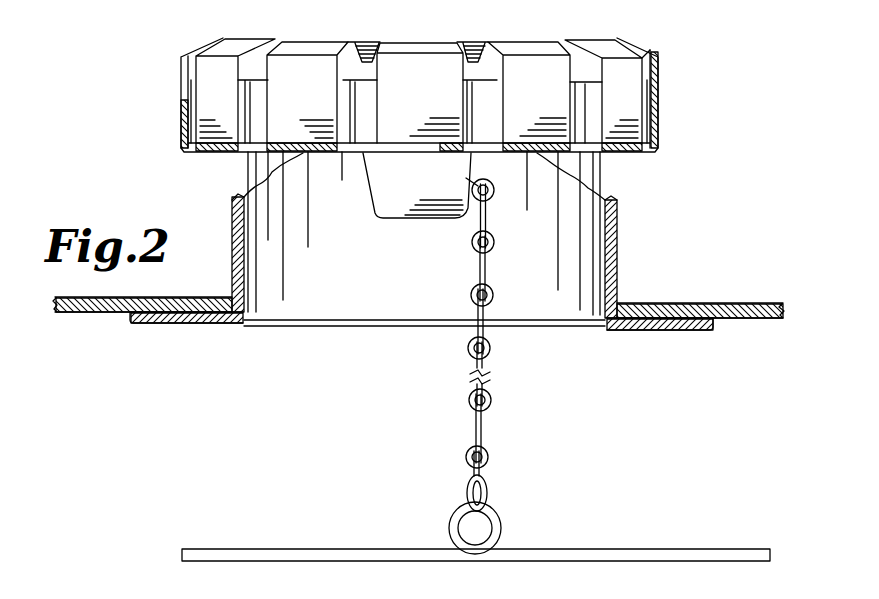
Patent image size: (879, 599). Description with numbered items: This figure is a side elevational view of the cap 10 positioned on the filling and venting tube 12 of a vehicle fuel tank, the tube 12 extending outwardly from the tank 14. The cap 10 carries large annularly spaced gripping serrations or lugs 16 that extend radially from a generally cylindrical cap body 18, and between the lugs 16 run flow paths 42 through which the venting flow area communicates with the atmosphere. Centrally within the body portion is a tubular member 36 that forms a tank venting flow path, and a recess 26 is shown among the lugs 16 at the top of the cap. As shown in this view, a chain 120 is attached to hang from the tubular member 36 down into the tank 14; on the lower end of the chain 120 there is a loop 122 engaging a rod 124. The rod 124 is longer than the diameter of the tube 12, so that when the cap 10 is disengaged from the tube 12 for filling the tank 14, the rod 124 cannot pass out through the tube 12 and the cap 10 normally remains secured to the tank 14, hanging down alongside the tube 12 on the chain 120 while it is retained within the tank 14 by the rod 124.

The cap 10 is at (664, 95).
The filling and venting tube 12 is at (610, 245).
The tank 14 is at (733, 307).
The lugs 16 is at (542, 54).
The cap body 18 is at (358, 152).
The notch 26 is at (474, 44).
The tubular member 36 is at (376, 222).
The flow paths 42 is at (367, 70).
The chain 120 is at (490, 352).
The loop 122 is at (502, 523).
The rod 124 is at (625, 550).